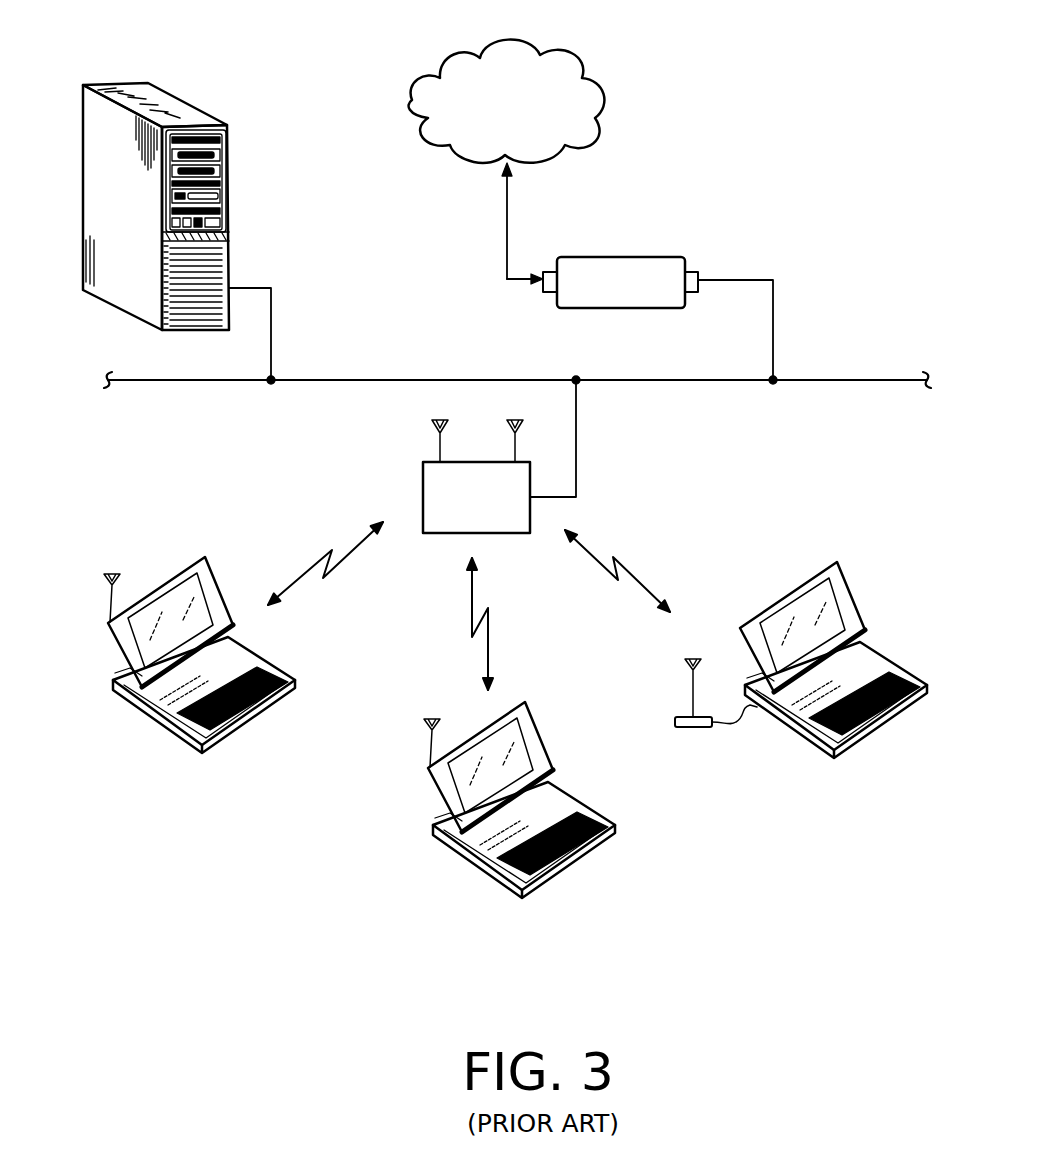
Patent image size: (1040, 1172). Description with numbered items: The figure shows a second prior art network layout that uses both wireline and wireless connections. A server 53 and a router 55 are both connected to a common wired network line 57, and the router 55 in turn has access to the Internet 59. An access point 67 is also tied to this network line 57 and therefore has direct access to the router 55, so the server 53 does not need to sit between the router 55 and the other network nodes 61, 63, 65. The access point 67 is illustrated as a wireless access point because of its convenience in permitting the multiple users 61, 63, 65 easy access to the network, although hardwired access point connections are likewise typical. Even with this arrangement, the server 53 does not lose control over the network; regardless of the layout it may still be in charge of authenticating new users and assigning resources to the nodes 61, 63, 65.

The server 53 is at (167, 92).
The router 55 is at (637, 257).
The network bus 57 is at (355, 378).
The Internet 59 is at (563, 54).
The network node 61 is at (252, 716).
The network node 63 is at (577, 858).
The network node 65 is at (890, 714).
The access point 67 is at (423, 478).